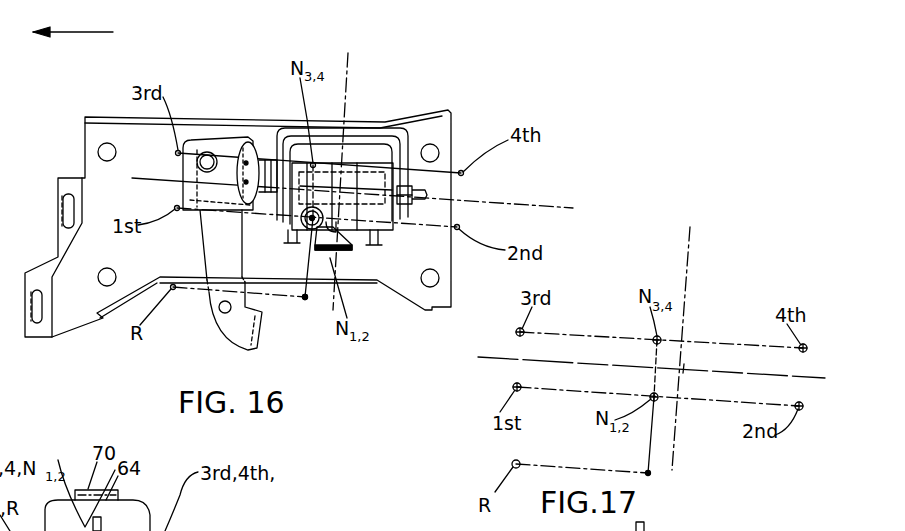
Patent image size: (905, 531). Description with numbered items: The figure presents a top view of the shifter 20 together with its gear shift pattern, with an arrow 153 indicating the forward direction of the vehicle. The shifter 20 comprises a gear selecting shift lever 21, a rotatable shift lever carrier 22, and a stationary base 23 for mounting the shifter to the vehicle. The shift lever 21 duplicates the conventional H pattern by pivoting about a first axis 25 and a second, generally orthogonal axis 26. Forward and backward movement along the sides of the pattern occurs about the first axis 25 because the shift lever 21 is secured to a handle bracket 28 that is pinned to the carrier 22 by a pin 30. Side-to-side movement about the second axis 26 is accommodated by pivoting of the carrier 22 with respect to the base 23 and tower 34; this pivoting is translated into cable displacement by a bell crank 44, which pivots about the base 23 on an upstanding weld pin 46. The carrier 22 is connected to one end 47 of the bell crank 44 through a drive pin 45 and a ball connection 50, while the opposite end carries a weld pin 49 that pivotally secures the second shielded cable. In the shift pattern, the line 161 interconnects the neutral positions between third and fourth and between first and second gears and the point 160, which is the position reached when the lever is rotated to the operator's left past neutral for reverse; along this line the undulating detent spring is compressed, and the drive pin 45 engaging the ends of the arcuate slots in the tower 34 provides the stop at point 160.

In FIG. 16, the shifter 20 is at (467, 102).
In FIG. 16, the arrow 153 is at (88, 32).
In FIG. 16, the shift lever 21 is at (345, 252).
In FIG. 16, the shift lever carrier 22 is at (367, 165).
In FIG. 16, the stationary base 23 is at (413, 264).
In FIG. 16, the first axis 25 is at (349, 65).
In FIG. 17, the first axis 25 is at (692, 232).
In FIG. 16, the second axis 26 is at (543, 205).
In FIG. 17, the second axis 26 is at (488, 360).
In FIG. 16, the handle bracket 28 is at (428, 195).
In FIG. 16, the pin 30 is at (322, 250).
In FIG. 16, the tower 34 is at (398, 143).
In FIG. 16, the bell crank 44 is at (233, 245).
In FIG. 16, the drive pin 45 is at (248, 160).
In FIG. 16, the weld pin 46 is at (198, 154).
In FIG. 16, the one end of bell crank 47 is at (232, 140).
In FIG. 16, the weld pin 49 is at (222, 312).
In FIG. 16, the ball connection 50 is at (236, 170).
In FIG. 16, the point 160 is at (304, 299).
In FIG. 17, the point 160 is at (650, 475).
In FIG. 16, the line 161 is at (307, 300).
In FIG. 17, the line 161 is at (654, 443).